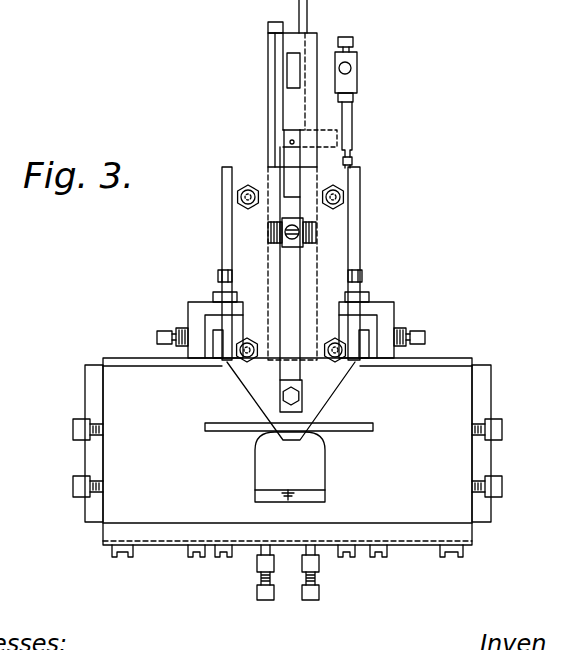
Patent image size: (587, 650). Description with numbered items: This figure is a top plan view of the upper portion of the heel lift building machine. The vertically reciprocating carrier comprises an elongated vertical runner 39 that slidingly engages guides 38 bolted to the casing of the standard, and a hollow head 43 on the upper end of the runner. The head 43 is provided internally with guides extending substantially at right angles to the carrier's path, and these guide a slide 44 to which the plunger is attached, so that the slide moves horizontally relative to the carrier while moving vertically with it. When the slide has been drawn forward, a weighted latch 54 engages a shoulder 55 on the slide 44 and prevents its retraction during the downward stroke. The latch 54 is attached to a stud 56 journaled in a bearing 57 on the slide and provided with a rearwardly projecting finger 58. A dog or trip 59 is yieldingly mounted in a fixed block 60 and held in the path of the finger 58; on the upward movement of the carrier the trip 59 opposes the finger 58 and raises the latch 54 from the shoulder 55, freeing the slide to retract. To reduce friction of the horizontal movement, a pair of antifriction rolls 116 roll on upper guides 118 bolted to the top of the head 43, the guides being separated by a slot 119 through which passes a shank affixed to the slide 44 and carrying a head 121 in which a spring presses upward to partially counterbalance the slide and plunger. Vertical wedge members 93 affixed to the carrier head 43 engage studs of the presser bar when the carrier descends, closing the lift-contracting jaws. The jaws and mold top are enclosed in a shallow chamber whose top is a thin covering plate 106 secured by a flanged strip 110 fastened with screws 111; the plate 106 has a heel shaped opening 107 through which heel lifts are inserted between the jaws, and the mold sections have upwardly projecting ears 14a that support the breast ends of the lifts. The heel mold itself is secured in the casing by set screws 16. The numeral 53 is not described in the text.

The slide 44 is at (310, 42).
The shoulder 55 is at (291, 68).
The bearing 57 is at (330, 128).
The weighted latch 54 is at (293, 163).
The slot 119 is at (292, 275).
The head 121 is at (290, 248).
The fixed block 60 is at (357, 63).
The dog or trip 59 is at (353, 100).
The finger 58 is at (346, 122).
The stud 56 is at (355, 142).
The upper guides 118 is at (248, 247).
The hollow head 43 is at (361, 235).
The antifriction rolls 116 is at (272, 248).
The guides 38 is at (205, 328).
The runner 39 is at (190, 350).
The wedge-members 93 is at (228, 358).
The covering plate 106 is at (413, 512).
The flanged strip 110 is at (463, 533).
The blade 53 is at (373, 427).
The heel shaped opening 107 is at (325, 468).
The ears 14a is at (307, 500).
The screws 111 is at (112, 550).
The set screws 16 is at (262, 601).